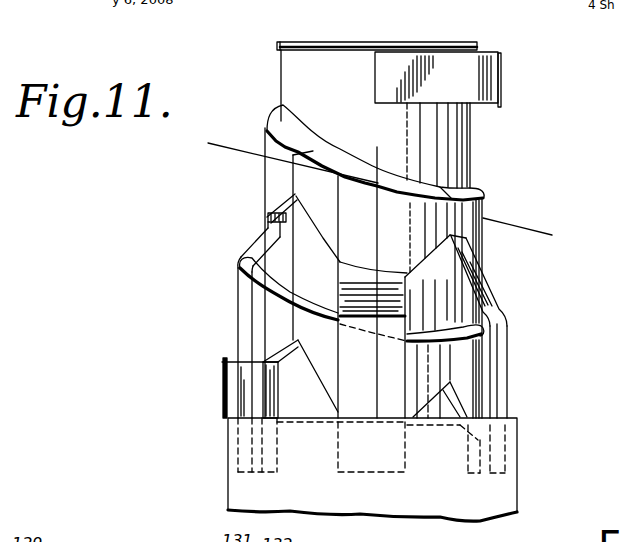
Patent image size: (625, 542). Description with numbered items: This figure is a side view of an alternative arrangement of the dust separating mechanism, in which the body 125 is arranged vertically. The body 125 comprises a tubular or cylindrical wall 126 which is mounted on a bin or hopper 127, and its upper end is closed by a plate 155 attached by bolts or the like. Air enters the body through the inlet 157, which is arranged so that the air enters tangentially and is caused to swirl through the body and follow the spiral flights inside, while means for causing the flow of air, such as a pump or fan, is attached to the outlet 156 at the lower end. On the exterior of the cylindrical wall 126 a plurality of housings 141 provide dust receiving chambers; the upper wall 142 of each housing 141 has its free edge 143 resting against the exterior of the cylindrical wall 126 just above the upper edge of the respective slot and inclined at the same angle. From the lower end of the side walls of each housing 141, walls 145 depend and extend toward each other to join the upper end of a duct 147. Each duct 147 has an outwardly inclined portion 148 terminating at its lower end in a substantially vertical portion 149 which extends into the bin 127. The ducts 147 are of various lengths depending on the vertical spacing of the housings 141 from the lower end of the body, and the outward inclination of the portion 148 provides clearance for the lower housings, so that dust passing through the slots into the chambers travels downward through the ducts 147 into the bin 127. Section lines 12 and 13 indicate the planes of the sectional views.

The section line 12 is at (228, 176).
The section line 13 is at (418, 153).
The body 125 is at (262, 73).
The cylindrical wall 126 is at (452, 148).
The bin 127 is at (503, 487).
The housing 141 is at (328, 190).
The upper wall 142 is at (355, 172).
The free edge 143 is at (290, 132).
The depending walls 145 is at (304, 214).
The duct 147 is at (233, 293).
The outwardly inclined portion 148 is at (252, 237).
The vertical portion 149 is at (492, 373).
The plate 155 is at (412, 44).
The outlet 156 is at (223, 366).
The inlet 157 is at (483, 60).